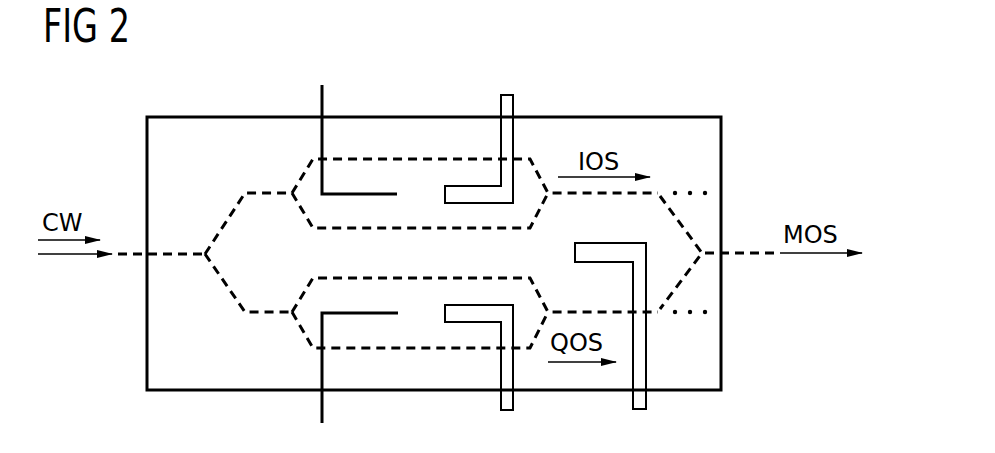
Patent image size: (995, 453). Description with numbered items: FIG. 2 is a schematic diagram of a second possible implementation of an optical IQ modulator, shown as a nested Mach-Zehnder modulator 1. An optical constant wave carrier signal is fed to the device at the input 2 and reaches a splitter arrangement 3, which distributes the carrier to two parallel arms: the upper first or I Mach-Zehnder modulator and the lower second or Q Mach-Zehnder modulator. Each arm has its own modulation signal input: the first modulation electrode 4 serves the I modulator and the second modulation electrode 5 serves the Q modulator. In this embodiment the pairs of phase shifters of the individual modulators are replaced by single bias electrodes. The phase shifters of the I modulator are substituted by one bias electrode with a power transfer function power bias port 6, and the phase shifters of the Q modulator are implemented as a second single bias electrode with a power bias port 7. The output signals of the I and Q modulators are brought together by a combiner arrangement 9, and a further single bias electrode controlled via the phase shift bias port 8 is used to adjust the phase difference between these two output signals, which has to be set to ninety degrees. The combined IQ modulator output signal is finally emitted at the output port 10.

The IQM nested Mach-Zehnder modulator 1 is at (433, 117).
The input 2 is at (125, 252).
The splitter arrangement 3 is at (228, 222).
The first modulation electrode 4 is at (322, 100).
The second modulation electrode 5 is at (322, 405).
The first power bias port 6 is at (514, 107).
The second (PTF) power bias port 7 is at (501, 400).
The phase shift bias port 8 is at (633, 398).
The combiner arrangement 9 is at (668, 212).
The output port 10 is at (740, 252).